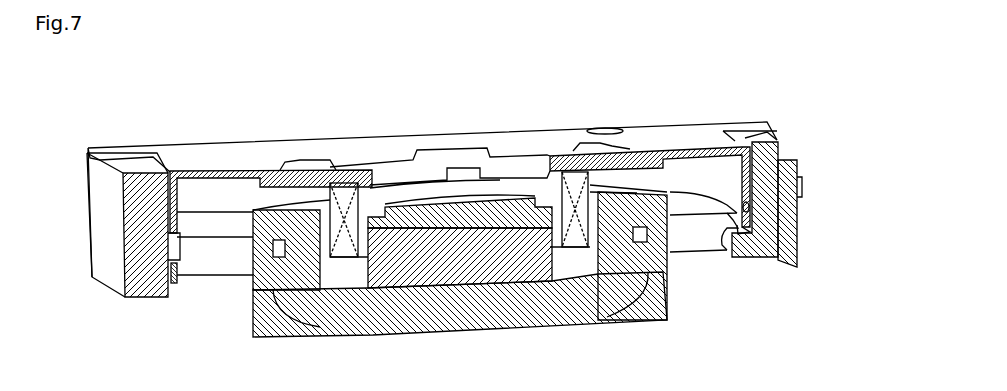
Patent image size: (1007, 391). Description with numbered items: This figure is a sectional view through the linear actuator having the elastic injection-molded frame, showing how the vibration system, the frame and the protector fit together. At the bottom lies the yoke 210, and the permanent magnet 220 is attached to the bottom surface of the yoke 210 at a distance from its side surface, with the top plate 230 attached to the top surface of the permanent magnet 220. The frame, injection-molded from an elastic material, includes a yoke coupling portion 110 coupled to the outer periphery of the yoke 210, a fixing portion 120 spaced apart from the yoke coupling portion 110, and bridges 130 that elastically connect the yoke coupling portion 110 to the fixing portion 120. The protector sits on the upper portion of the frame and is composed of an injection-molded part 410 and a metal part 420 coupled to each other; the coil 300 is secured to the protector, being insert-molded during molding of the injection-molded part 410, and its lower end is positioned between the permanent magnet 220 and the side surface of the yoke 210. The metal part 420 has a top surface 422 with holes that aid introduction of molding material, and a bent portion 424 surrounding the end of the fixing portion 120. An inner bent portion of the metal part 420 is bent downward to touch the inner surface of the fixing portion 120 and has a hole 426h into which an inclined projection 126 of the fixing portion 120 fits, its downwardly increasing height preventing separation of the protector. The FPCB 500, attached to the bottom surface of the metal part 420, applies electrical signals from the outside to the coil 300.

The yoke coupling portion 110 is at (253, 320).
The fixing portion 120 is at (123, 265).
The inclined projection 126 is at (730, 227).
The bridge 130 is at (693, 247).
The yoke 210 is at (413, 335).
The permanent magnet 220 is at (438, 277).
The top plate 230 is at (478, 220).
The coil 300 is at (577, 240).
The injection-molded part 410 is at (370, 185).
The metal part 420 is at (189, 143).
The top surface 422 is at (220, 170).
The bent portion 424 is at (210, 200).
The hole 426h is at (738, 208).
The FPCB 500 is at (797, 212).